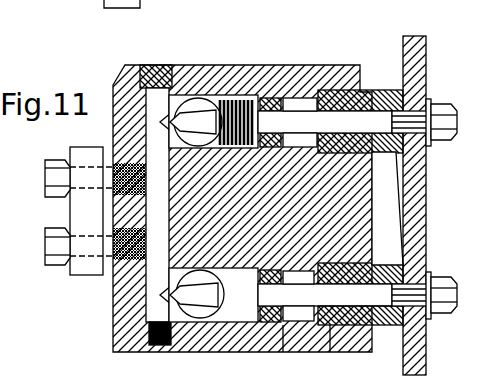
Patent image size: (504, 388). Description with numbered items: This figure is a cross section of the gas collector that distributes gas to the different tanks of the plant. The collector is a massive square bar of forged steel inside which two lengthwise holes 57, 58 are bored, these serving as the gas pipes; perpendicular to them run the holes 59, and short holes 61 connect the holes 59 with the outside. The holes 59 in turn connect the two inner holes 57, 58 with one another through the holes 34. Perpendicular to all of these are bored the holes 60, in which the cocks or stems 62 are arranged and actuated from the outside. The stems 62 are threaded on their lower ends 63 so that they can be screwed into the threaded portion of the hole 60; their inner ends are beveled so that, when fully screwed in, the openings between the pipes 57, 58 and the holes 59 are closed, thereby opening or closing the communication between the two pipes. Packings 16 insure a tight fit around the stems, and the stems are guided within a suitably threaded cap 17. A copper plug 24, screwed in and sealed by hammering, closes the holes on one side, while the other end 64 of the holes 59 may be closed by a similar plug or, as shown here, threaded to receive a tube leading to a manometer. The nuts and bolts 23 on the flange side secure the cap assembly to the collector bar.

The holes 59 is at (113, 82).
The holes 34 is at (154, 135).
The plug 24 is at (165, 68).
The hole 58 is at (207, 105).
The threaded lower ends 63 is at (245, 100).
The holes 60 is at (299, 99).
The cocks 62 is at (318, 118).
The flange bolt 23 is at (422, 57).
The short holes 61 is at (148, 207).
The threaded cap 17 is at (372, 258).
The hole 57 is at (204, 312).
The other end of holes 64 is at (164, 345).
The packings 16 is at (287, 325).